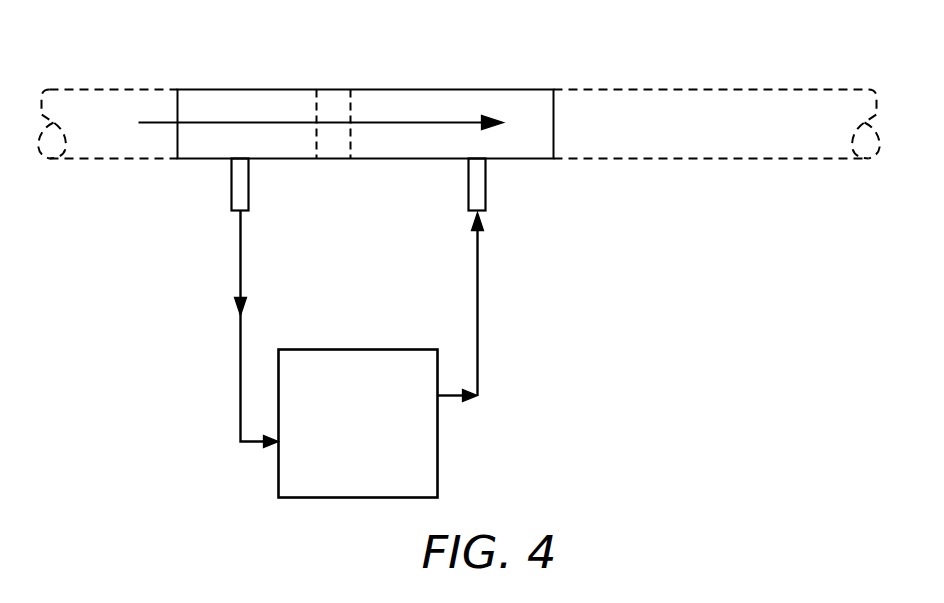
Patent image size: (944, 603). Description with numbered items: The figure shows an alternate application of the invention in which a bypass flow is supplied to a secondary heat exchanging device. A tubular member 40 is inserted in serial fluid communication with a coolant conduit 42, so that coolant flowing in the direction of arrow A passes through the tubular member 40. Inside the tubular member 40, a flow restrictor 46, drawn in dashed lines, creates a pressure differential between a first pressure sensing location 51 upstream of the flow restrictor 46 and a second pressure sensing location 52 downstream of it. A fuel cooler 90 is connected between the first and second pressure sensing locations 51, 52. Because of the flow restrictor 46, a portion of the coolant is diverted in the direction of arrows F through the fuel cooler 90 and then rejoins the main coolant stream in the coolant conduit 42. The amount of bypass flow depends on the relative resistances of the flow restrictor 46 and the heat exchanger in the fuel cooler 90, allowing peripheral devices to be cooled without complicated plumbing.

The coolant conduit 42 is at (104, 94).
The tubular member 40 is at (228, 98).
The flow restrictor 46 is at (349, 104).
The arrow A is at (418, 120).
The first pressure sensing location 51 is at (238, 163).
The second pressure sensing location 52 is at (470, 160).
The arrows F is at (240, 277).
The fuel cooler 90 is at (430, 473).